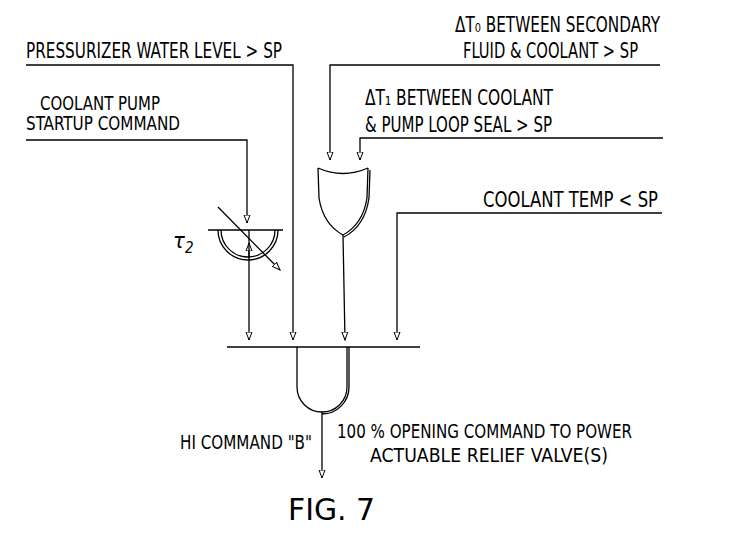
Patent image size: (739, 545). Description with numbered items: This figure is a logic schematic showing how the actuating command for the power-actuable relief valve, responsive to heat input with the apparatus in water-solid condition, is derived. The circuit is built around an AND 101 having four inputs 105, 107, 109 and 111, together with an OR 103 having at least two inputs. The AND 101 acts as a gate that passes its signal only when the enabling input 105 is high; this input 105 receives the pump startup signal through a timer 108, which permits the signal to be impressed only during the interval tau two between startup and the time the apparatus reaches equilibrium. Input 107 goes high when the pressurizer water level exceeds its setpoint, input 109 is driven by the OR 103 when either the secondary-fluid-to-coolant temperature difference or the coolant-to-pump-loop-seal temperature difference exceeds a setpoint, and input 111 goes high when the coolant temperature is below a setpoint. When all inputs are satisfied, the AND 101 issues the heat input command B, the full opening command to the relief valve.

The AND 101 is at (348, 376).
The OR 103 is at (368, 198).
The input 105 is at (247, 343).
The input 107 is at (293, 343).
The timer 108 is at (264, 229).
The input 109 is at (348, 343).
The input 111 is at (400, 343).